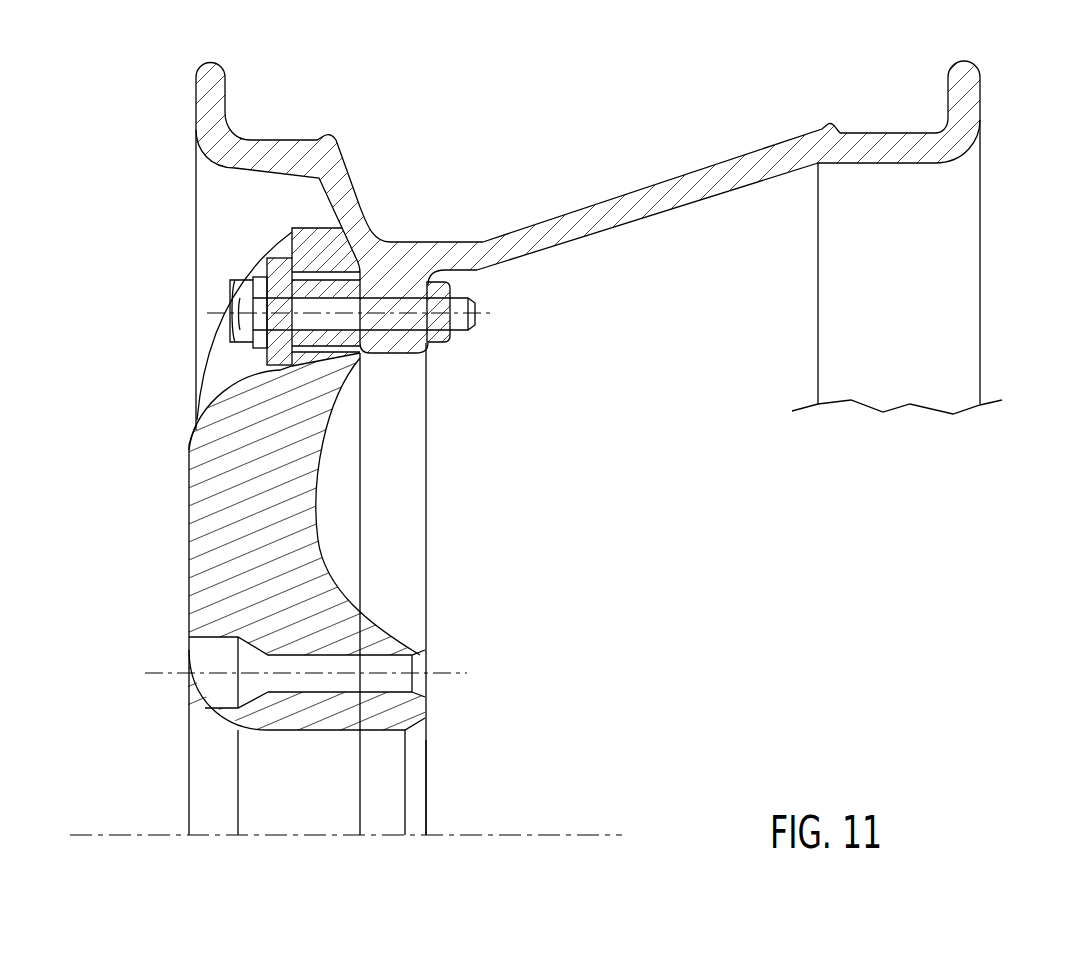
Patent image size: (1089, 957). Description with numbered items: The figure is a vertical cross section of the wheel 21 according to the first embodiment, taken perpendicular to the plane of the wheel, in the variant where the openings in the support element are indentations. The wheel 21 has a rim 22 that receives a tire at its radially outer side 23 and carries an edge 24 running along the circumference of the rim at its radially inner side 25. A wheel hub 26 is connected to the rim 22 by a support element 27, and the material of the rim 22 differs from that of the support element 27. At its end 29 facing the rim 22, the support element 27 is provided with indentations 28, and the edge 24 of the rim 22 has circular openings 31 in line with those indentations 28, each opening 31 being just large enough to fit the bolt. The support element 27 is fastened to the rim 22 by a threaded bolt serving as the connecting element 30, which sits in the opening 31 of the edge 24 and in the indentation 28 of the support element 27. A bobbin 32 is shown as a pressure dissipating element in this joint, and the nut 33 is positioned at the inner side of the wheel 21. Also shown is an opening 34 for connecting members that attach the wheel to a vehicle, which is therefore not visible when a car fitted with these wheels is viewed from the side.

The wheel 21 is at (980, 205).
The rim 22 is at (726, 173).
The radially outer side 23 is at (627, 163).
The edge 24 is at (395, 353).
The radially inner side 25 is at (725, 260).
The wheel hub 26 is at (422, 800).
The support element 27 is at (314, 560).
The indentations 28 is at (292, 232).
The end 29 is at (305, 247).
The connecting elements 30 is at (478, 318).
The openings 31 is at (395, 305).
The bobbin 32 is at (265, 265).
The nut 33 is at (449, 345).
The opening 34 is at (410, 667).